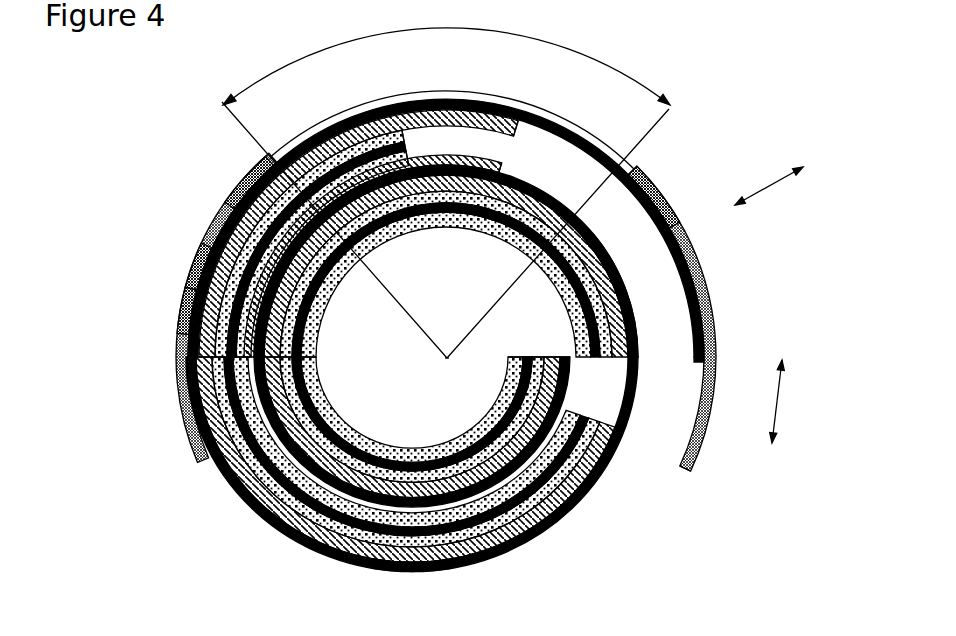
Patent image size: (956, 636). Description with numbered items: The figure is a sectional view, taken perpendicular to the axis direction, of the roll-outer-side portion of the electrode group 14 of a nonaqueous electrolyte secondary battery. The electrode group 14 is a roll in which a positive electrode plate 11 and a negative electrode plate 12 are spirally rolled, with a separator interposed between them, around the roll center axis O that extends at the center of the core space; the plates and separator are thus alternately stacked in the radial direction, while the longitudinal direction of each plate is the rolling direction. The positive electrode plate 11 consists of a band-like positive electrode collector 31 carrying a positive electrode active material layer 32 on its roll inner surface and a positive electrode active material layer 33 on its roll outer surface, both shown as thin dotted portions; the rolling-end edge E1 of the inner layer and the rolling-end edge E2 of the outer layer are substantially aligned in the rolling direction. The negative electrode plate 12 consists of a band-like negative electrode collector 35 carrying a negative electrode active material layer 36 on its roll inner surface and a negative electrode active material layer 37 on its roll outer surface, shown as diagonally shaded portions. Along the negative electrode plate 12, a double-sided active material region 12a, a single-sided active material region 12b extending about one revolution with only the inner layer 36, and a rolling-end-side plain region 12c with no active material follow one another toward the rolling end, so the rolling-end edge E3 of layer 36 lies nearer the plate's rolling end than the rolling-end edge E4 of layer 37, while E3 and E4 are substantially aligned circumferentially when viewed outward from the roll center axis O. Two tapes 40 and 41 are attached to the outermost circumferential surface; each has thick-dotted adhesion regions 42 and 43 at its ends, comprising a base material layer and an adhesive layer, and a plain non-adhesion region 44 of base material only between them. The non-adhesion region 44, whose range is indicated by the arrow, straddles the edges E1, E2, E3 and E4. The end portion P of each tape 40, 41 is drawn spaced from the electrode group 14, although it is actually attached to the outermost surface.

The positive electrode plate 11 is at (412, 336).
The negative electrode plate 12 is at (445, 348).
The double-sided active material region 12a is at (550, 357).
The single-sided active material region 12b is at (607, 292).
The rolling-end-side plain region 12c is at (690, 323).
The electrode group 14 is at (603, 493).
The positive electrode collector 31 is at (195, 272).
The positive electrode active material layer 32 is at (247, 337).
The positive electrode active material layer 33 is at (186, 316).
The negative electrode collector 35 is at (418, 577).
The negative electrode active material layer 36 is at (491, 110).
The negative electrode active material layer 37 is at (463, 207).
The tape 40 is at (501, 312).
The tape 41 is at (708, 263).
The adhesion region 42 is at (222, 212).
The adhesion region 43 is at (663, 193).
The non-adhesion region 44 is at (348, 103).
The rolling-end edge of positive electrode active material layer 32 E1 is at (410, 157).
The rolling-end edge of positive electrode active material layer 33 E2 is at (413, 128).
The rolling-end edge of negative electrode active material layer 36 E3 is at (524, 128).
The rolling-end edge of negative electrode active material layer 37 E4 is at (499, 173).
The roll center axis O is at (446, 377).
The end portion of tape in circumferential direction P is at (689, 480).